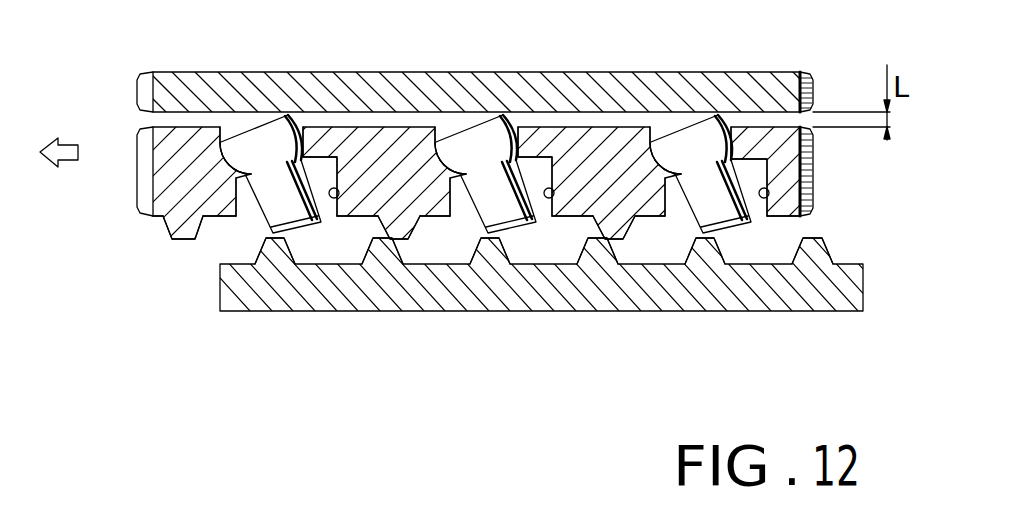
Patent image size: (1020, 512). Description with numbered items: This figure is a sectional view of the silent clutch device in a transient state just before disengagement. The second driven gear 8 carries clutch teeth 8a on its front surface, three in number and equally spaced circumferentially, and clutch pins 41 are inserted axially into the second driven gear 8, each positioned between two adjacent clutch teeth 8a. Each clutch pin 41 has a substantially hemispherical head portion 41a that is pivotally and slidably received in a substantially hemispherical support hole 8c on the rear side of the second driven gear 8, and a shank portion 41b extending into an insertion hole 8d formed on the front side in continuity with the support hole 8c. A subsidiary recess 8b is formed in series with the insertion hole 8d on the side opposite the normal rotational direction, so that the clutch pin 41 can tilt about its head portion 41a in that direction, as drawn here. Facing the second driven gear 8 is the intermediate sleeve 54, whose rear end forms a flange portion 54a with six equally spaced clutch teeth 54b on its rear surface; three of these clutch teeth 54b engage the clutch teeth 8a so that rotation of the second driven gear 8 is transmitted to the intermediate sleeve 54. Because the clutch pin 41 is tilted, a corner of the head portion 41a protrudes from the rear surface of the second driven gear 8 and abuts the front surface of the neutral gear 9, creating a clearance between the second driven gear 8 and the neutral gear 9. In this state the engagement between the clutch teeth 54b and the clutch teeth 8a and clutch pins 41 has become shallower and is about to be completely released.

The second driven gear 8 is at (163, 157).
The clutch teeth 8a is at (202, 221).
The subsidiary recess 8b is at (347, 157).
The support hole 8c is at (232, 133).
The insertion hole 8d is at (240, 215).
The neutral gear 9 is at (790, 90).
The clutch pin 41 is at (288, 115).
The head portion 41a is at (255, 142).
The shank portion 41b is at (306, 178).
The intermediate sleeve 54 is at (494, 324).
The flange portion 54a is at (220, 296).
The clutch teeth 54b is at (277, 252).